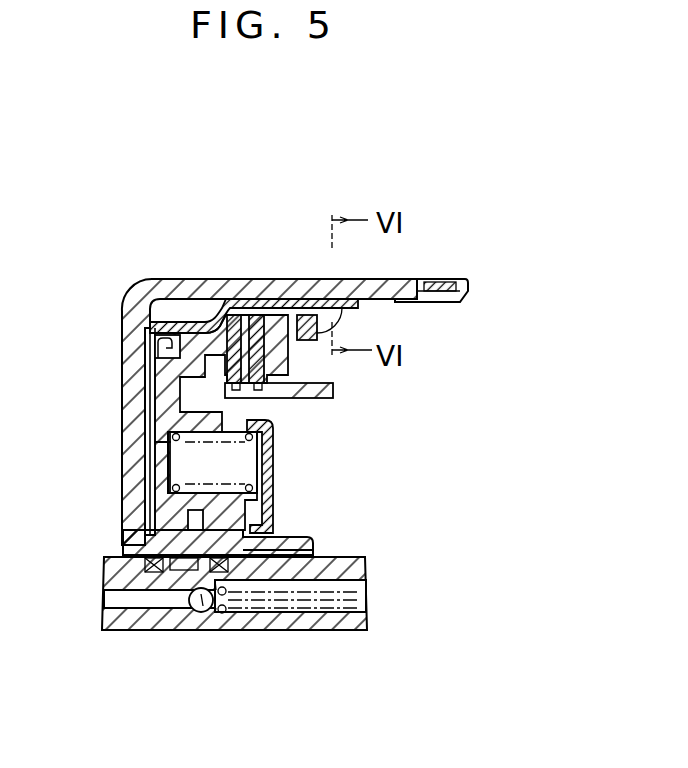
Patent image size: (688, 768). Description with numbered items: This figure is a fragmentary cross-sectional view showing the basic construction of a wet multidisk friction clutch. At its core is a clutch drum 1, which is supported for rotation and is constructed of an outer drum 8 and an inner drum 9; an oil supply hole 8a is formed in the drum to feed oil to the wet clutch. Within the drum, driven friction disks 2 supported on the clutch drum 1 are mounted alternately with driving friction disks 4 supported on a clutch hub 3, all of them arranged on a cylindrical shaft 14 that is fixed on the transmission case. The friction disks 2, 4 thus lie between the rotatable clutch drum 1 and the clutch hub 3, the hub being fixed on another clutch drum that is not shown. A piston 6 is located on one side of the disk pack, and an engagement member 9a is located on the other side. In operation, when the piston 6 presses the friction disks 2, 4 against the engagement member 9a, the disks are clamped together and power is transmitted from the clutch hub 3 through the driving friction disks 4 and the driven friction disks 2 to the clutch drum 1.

The clutch drum 1 is at (138, 268).
The driven friction disks 2 is at (253, 279).
The clutch hub 3 is at (333, 398).
The driving friction disks 4 is at (268, 398).
The piston 6 is at (147, 422).
The outer drum 8 is at (198, 279).
The oil supply hole 8a is at (284, 280).
The inner drum 9 is at (318, 279).
The engagement member 9a is at (290, 355).
The cylindrical shaft 14 is at (148, 632).